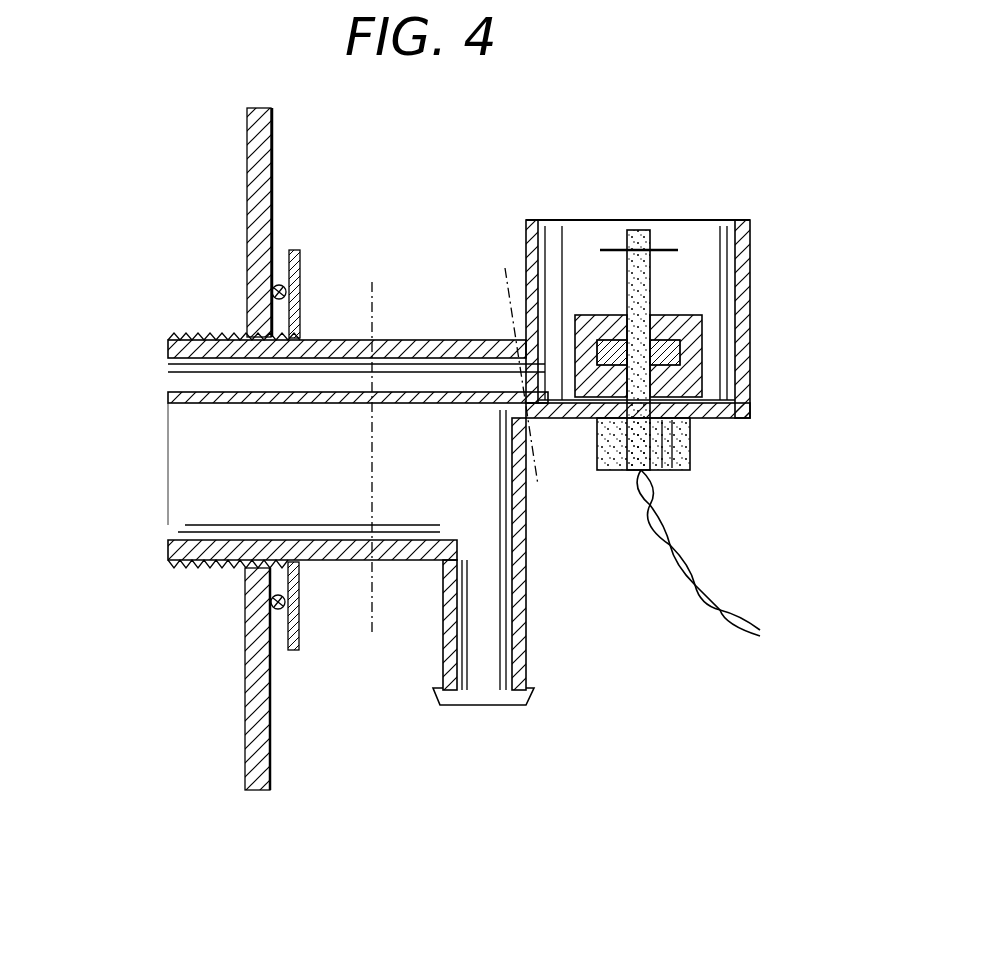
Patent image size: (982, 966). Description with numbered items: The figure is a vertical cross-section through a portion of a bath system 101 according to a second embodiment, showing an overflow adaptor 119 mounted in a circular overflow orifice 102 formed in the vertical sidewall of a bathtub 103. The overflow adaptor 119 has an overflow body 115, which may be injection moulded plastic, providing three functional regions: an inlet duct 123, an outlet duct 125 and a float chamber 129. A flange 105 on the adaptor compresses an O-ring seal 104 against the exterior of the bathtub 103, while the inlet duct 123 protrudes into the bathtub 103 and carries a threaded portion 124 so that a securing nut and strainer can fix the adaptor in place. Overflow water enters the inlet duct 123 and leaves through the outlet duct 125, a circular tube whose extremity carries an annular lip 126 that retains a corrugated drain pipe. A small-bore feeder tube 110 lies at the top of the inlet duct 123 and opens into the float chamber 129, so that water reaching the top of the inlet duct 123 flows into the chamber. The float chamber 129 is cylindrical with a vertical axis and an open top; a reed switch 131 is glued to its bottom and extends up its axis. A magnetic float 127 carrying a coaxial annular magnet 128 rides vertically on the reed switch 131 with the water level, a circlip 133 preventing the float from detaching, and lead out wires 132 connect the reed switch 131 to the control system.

The bath system 101 is at (590, 775).
The overflow orifice 102 is at (245, 572).
The bathtub 103 is at (246, 700).
The O-ring seal 104 is at (276, 612).
The flange 105 is at (300, 262).
The feeder tube 110 is at (283, 405).
The overflow body 115 is at (530, 538).
The overflow adaptor 119 is at (677, 650).
The inlet duct 123 is at (130, 333).
The threaded portion 124 is at (300, 325).
The outlet duct 125 is at (535, 740).
The annular lip 126 is at (530, 690).
The magnetic float 127 is at (705, 325).
The annular magnet 128 is at (682, 352).
The float chamber 129 is at (745, 195).
The reed switch 131 is at (690, 450).
The lead out wires 132 is at (715, 592).
The circlip 133 is at (668, 250).